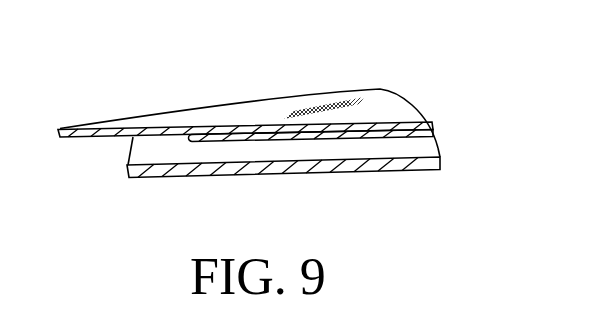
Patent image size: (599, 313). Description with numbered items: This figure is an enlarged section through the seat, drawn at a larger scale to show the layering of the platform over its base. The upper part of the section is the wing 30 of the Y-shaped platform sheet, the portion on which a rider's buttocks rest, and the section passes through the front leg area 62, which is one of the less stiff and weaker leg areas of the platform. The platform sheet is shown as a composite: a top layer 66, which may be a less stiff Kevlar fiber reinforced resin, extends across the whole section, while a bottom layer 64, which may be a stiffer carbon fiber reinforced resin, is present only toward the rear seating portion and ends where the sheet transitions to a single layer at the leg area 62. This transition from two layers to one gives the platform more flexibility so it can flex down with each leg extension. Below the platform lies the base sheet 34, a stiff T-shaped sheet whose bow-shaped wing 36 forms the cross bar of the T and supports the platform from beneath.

The wing 30 is at (237, 109).
The front leg area 62 is at (91, 134).
The top layer 66 is at (403, 125).
The wing 36 is at (138, 152).
The bottom layer 64 is at (438, 148).
The base sheet 34 is at (408, 167).